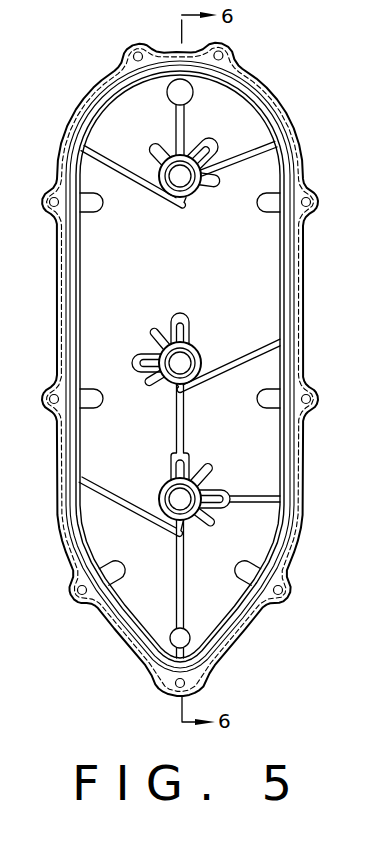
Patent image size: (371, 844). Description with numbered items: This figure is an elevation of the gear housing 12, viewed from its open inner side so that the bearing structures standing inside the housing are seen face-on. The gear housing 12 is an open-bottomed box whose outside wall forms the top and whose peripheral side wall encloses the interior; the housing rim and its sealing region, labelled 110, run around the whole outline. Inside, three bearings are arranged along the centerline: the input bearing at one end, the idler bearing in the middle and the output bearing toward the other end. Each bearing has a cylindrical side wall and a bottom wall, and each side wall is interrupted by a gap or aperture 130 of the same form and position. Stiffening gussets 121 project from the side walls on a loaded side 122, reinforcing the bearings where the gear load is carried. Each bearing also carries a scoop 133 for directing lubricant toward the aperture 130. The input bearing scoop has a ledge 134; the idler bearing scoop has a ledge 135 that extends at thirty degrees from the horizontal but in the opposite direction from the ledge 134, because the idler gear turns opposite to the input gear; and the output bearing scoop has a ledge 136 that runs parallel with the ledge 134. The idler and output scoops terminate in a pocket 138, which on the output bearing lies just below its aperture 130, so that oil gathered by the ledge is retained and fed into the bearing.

The gear housing 12 is at (315, 154).
The peripheral sealing wall 110 is at (303, 310).
The gussets 121 is at (190, 148).
The loaded side 122 is at (157, 337).
The gap or aperture 130 is at (160, 183).
The scoop 133 is at (119, 202).
The ledge 134 is at (93, 477).
The ledge 135 is at (270, 338).
The ledge 136 is at (104, 157).
The pocket 138 is at (173, 208).